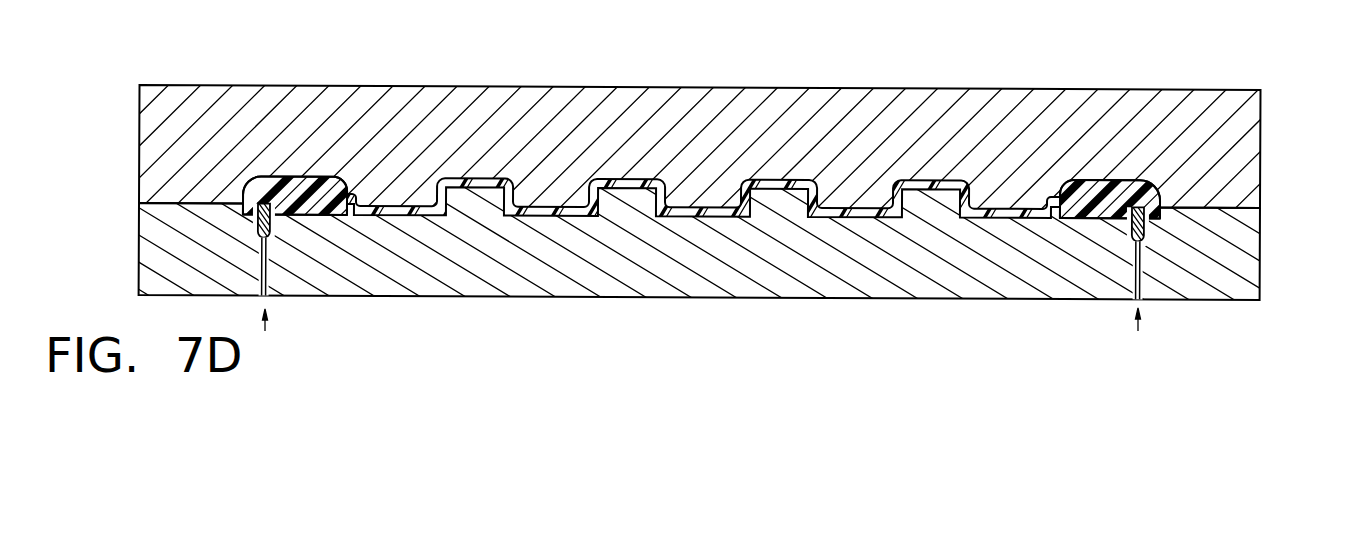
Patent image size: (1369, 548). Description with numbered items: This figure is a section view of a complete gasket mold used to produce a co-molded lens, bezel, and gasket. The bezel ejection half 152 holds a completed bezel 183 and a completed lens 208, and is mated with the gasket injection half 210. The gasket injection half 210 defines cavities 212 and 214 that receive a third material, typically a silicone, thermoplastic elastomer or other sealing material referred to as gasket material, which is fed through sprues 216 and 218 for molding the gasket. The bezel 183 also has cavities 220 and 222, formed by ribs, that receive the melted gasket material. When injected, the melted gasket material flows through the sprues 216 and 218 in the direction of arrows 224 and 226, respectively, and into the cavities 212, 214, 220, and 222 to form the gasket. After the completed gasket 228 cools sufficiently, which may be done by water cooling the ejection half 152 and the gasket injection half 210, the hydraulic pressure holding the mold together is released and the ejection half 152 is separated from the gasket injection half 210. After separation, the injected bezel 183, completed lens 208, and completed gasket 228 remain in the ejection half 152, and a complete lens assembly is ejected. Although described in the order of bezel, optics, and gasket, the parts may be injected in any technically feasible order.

The bezel ejection half 152 is at (1262, 139).
The bezel 183 is at (298, 185).
The lens 208 is at (643, 173).
The gasket injection half 210 is at (705, 293).
The cavity 212 is at (272, 224).
The cavity 214 is at (1146, 232).
The sprue 216 is at (260, 273).
The sprue 218 is at (1140, 290).
The cavity 220 is at (257, 214).
The cavity 222 is at (1152, 184).
The arrow 224 is at (267, 328).
The arrow 226 is at (1137, 323).
The gasket 228 is at (1133, 231).